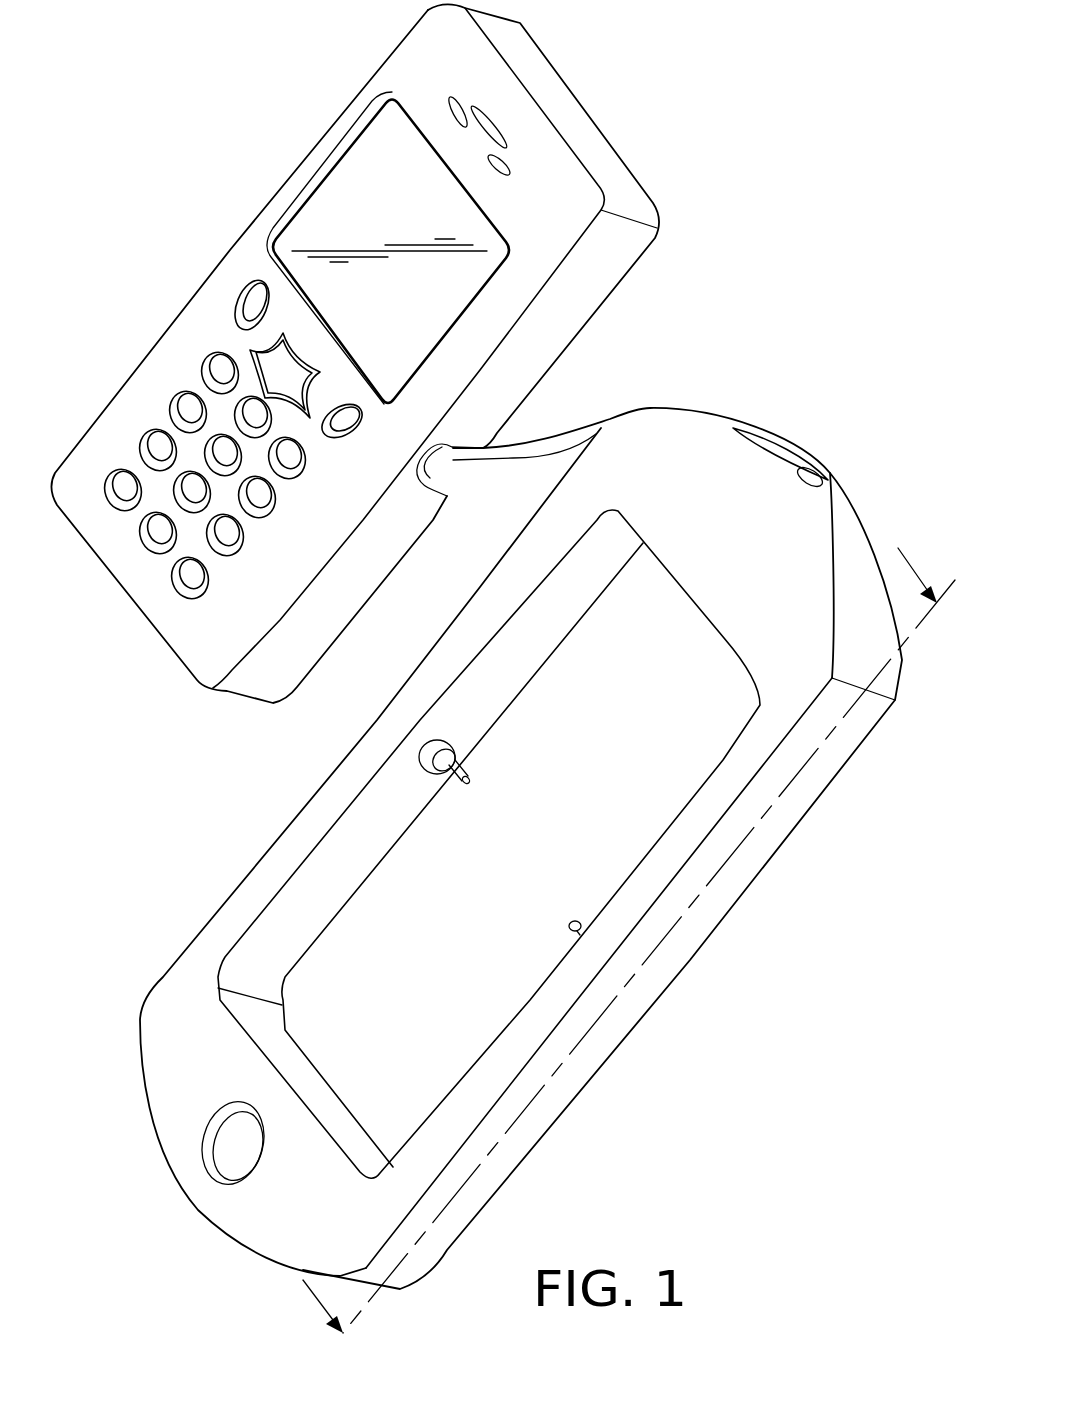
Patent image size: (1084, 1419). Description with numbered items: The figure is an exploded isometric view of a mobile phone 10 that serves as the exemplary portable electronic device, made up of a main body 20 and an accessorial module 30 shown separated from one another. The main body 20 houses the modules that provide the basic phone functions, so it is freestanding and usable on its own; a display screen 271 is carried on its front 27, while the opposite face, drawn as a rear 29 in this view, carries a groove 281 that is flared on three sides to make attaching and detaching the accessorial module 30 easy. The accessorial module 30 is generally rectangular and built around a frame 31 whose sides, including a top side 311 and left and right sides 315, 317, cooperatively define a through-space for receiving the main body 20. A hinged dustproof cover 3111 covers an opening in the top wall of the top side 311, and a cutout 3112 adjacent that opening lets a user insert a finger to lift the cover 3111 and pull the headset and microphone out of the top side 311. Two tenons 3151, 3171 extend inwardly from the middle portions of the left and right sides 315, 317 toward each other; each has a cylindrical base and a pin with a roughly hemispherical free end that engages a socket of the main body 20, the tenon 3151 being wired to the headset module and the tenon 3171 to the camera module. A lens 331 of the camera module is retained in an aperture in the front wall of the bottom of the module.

The mobile phone 10 is at (763, 60).
The main body 20 is at (652, 112).
The front 27 is at (417, 55).
The display screen 271 is at (353, 175).
The rear housing 29 is at (607, 250).
The groove 281 is at (601, 424).
The accessorial module 30 is at (803, 406).
The top side 311 is at (785, 540).
The dustproof cover 3111 is at (767, 443).
The cutout 3112 is at (808, 467).
The frame 31 is at (760, 827).
The left side 315 is at (237, 918).
The tenon 3151 is at (445, 740).
The right side 317 is at (653, 867).
The tenon 3171 is at (568, 922).
The lens 331 is at (237, 1152).